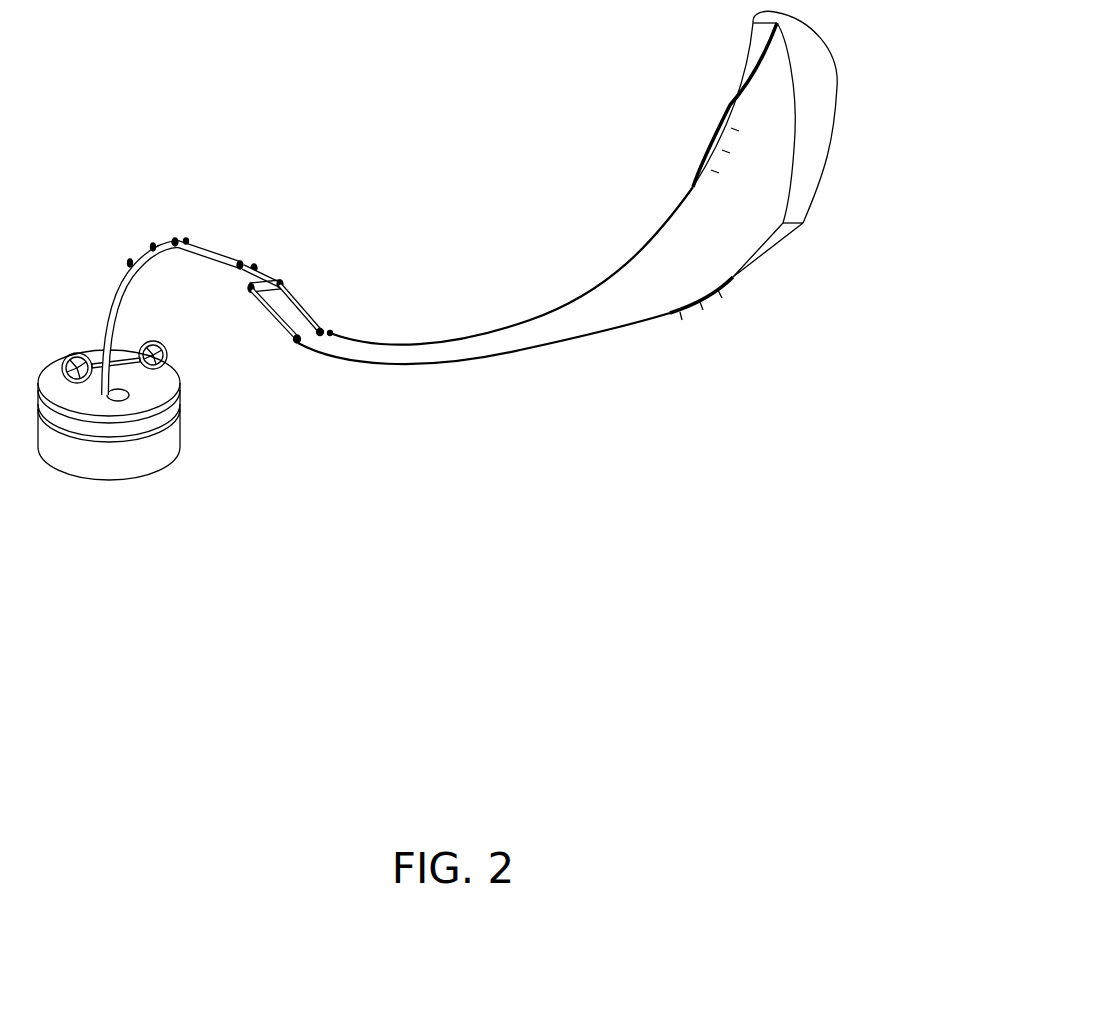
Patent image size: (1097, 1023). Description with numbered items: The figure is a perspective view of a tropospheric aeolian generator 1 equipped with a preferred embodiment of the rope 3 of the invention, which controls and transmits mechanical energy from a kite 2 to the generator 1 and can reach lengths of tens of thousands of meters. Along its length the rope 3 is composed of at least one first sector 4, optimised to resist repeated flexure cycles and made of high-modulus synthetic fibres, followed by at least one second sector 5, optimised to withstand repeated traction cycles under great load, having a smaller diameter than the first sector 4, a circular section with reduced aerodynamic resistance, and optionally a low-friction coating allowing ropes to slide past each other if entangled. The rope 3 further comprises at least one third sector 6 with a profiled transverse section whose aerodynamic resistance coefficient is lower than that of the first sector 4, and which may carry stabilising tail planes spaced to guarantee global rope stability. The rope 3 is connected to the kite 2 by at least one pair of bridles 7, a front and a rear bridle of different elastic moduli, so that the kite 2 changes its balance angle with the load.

The tropospheric aeolian generator 1 is at (158, 473).
The kite 2 is at (872, 195).
The rope 3 is at (343, 348).
The first sector 4 is at (463, 370).
The second sector 5 is at (630, 340).
The third sector 6 is at (735, 315).
The bridles 7 is at (732, 67).